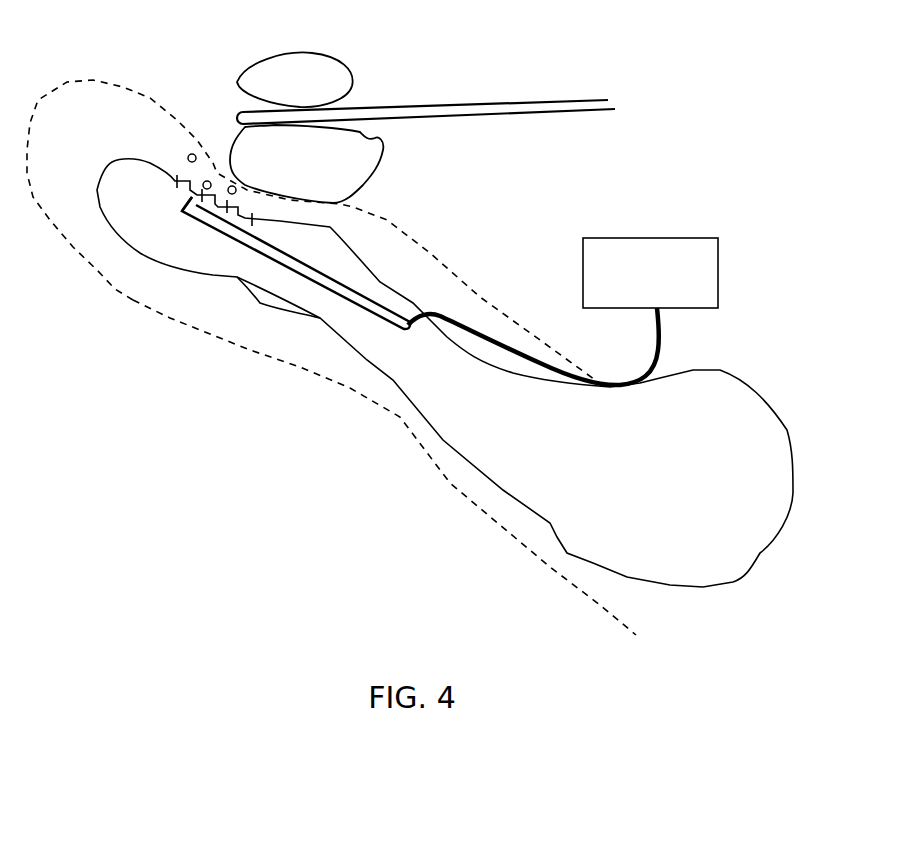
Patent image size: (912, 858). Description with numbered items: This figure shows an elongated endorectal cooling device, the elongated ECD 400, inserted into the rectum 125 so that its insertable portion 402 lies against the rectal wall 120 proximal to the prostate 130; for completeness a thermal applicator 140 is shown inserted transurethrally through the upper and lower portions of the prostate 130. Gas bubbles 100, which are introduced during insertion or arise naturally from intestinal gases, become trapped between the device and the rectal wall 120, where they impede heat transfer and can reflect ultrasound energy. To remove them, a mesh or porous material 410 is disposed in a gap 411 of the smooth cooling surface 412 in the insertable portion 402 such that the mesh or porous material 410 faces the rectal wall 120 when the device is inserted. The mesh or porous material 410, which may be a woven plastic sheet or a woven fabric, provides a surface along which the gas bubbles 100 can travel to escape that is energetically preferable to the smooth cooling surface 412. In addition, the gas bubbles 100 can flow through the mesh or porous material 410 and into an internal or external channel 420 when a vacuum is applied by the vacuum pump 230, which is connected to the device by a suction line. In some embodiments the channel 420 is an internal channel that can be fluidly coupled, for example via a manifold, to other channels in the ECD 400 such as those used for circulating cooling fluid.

The gas bubbles 100 is at (207, 176).
The rectal wall 120 is at (223, 152).
The rectum 125 is at (56, 202).
The prostate 130 is at (291, 93).
The thermal applicator 140 is at (491, 90).
The vacuum pump 230 is at (636, 295).
The elongated ECD 400 is at (479, 422).
The insertable portion 402 is at (116, 147).
The mesh or porous material 410 is at (178, 166).
The gap 411 is at (265, 236).
The cooling surface 412 is at (283, 217).
The channel 420 is at (181, 213).